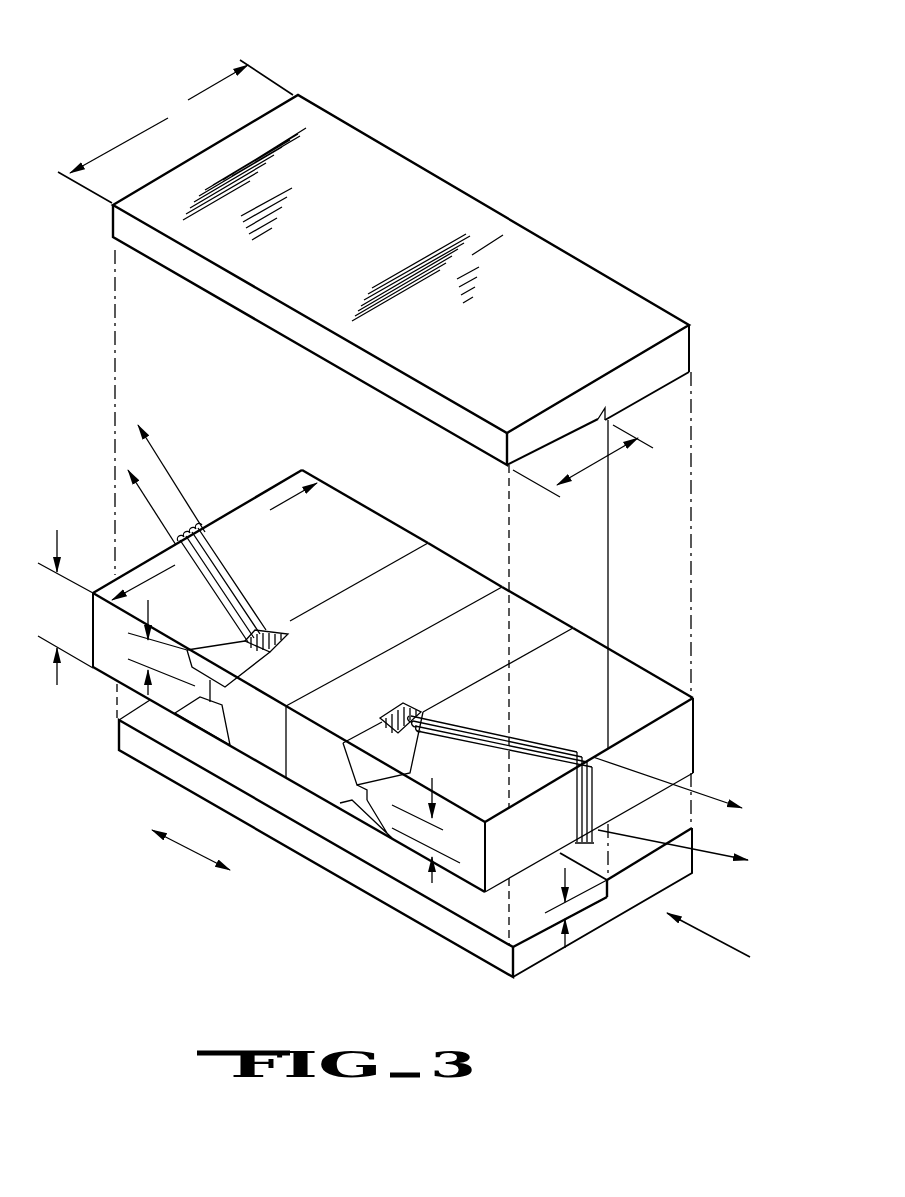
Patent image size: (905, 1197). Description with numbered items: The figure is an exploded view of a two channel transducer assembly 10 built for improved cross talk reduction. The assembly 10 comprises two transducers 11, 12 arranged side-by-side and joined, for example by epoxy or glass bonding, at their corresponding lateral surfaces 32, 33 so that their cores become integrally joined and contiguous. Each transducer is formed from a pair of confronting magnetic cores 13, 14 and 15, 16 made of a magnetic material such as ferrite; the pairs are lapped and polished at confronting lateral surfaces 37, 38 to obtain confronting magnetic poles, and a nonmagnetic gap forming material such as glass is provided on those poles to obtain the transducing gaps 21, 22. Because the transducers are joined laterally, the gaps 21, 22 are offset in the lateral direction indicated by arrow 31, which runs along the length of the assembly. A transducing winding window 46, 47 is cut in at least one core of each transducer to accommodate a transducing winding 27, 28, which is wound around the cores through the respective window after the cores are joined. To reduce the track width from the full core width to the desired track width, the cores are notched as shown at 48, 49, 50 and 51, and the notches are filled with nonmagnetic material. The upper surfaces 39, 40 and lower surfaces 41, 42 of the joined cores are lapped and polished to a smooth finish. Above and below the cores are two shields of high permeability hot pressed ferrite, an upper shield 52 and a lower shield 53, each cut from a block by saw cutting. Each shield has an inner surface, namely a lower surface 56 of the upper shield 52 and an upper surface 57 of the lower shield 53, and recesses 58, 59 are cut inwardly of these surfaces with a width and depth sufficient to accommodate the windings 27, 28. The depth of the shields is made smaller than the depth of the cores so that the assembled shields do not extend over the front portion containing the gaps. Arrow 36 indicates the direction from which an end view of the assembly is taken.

The two channel transducer assembly 10 is at (192, 43).
The transducer 11 is at (277, 483).
The transducer 12 is at (693, 725).
The magnetic core 13 is at (350, 492).
The magnetic core 14 is at (435, 557).
The magnetic core 15 is at (525, 612).
The magnetic core 16 is at (617, 663).
The transducing gap 21 is at (217, 695).
The transducing gap 22 is at (358, 787).
The transducing winding 27 is at (223, 575).
The transducing winding 28 is at (543, 750).
The lateral direction 31 is at (191, 846).
The lateral surface 32 is at (443, 618).
The lateral surface 33 is at (428, 627).
The arrow 36 is at (708, 933).
The confronting lateral surface 37 is at (345, 587).
The confronting lateral surface 38 is at (518, 657).
The upper surface 39 is at (378, 555).
The upper surface 40 is at (660, 712).
The lower surface 41 is at (102, 673).
The lower surface 42 is at (460, 883).
The transducing winding window 46 is at (288, 638).
The transducing winding window 47 is at (397, 703).
The notch 48 is at (217, 650).
The notch 49 is at (195, 717).
The notch 50 is at (357, 740).
The notch 51 is at (360, 827).
The upper shield 52 is at (382, 155).
The lower shield 53 is at (460, 933).
The lower surface of shield 56 is at (655, 392).
The upper surface of shield 57 is at (666, 836).
The recess 58 is at (577, 428).
The recess 59 is at (602, 898).